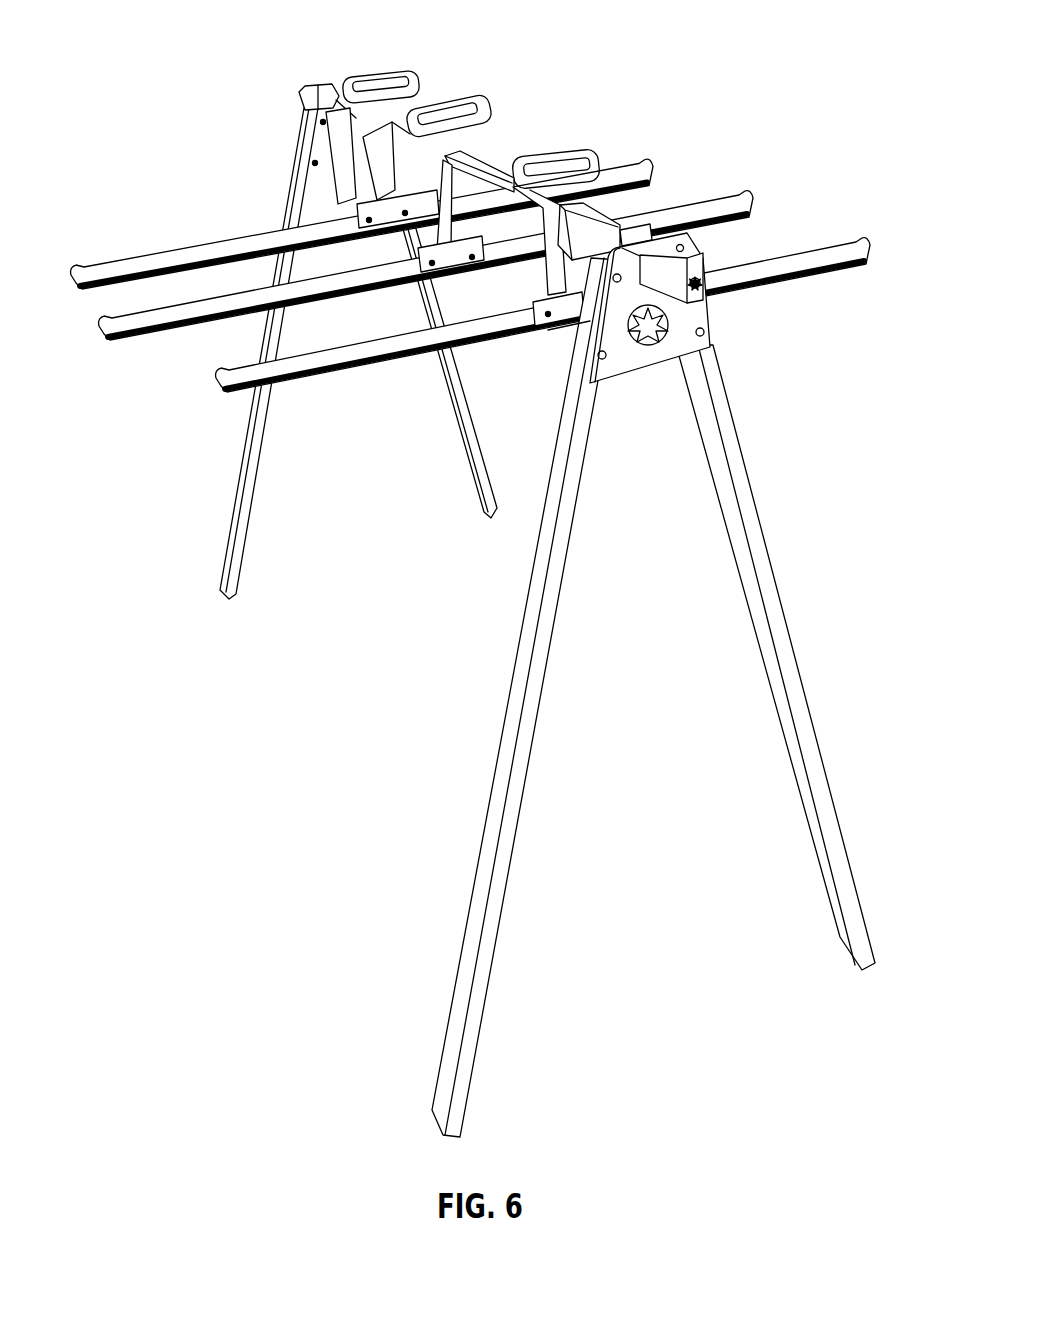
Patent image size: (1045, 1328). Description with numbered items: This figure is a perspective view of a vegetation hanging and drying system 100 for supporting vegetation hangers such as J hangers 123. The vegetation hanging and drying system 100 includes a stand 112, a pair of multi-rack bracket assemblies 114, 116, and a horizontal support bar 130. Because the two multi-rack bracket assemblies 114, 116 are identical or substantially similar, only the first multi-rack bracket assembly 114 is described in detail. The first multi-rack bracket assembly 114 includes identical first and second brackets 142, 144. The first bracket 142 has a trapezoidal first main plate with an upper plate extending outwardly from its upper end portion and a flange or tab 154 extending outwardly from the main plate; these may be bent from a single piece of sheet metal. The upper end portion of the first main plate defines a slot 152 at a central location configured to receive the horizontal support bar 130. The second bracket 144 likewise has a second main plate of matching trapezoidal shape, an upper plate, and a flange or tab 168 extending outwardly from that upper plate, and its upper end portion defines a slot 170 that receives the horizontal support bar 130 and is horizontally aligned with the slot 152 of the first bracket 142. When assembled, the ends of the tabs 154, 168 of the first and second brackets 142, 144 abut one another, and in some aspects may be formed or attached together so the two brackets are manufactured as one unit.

The vegetation hanging and drying system 100 is at (488, 585).
The stand 112 is at (767, 547).
The first multi-rack bracket assembly 114 is at (641, 294).
The second multi-rack bracket assembly 116 is at (310, 124).
The J hangers 123 is at (714, 195).
The horizontal support bar 130 is at (486, 160).
The first bracket 142 is at (655, 369).
The second bracket 144 is at (598, 218).
The slot 152 is at (548, 330).
The tab 154 is at (652, 224).
The tab 168 is at (604, 236).
The slot 170 is at (634, 287).